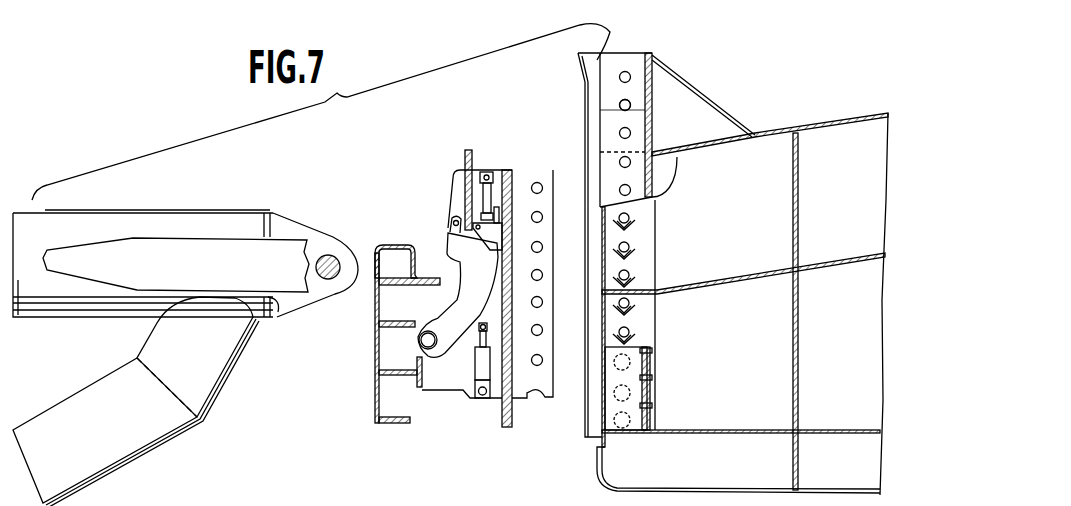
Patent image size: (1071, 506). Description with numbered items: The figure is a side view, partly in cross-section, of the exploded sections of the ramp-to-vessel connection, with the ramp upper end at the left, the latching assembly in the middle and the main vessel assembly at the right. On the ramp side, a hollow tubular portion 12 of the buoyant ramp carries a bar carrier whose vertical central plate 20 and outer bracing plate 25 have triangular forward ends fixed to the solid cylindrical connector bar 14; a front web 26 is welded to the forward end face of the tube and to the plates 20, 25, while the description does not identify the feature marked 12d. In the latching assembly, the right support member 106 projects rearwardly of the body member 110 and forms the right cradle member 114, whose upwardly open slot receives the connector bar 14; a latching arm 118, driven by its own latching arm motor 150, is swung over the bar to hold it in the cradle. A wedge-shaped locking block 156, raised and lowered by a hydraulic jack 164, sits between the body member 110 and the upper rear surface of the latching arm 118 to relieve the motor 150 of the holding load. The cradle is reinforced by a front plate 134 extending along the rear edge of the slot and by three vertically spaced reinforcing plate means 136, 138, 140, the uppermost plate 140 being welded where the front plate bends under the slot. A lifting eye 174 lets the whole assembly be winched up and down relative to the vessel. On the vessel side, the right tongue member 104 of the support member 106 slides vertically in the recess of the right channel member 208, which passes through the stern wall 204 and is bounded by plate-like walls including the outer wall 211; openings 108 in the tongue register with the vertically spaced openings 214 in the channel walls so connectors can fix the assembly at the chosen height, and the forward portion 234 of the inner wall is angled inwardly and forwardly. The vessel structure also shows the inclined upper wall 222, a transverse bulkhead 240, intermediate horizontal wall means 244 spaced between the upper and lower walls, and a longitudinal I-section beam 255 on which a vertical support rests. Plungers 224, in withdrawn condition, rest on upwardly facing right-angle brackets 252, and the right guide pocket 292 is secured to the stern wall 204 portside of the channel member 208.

The hollow tubular portion 12 is at (87, 222).
The arm pad flap 12d is at (210, 399).
The connector bar 14 is at (333, 258).
The central plate 20 is at (293, 232).
The outer bracing plate 25 is at (235, 252).
The front web 26 is at (277, 306).
The right tongue member 104 is at (548, 198).
The right support member 106 is at (520, 170).
The first openings 108 is at (541, 185).
The body member 110 is at (501, 412).
The right cradle member 114 is at (438, 283).
The latching arm 118 is at (489, 270).
The front plate 134 is at (378, 251).
The lowermost reinforcing plate means 136 is at (390, 383).
The reinforcing plate means 138 is at (402, 329).
The uppermost reinforcing plate means 140 is at (388, 287).
The latching arm motor 150 is at (493, 362).
The locking block 156 is at (493, 237).
The hydraulic jack 164 is at (493, 193).
The lifting eye 174 is at (466, 152).
The stern wall 204 is at (602, 397).
The right channel member 208 is at (631, 60).
The outer wall 211 is at (638, 125).
The transverse openings 214 is at (630, 105).
The upper wall 222 is at (828, 123).
The plunger 224 is at (634, 217).
The forward portion of inner wall 234 is at (656, 72).
The bulkhead 240 is at (798, 188).
The intermediate horizontal wall means 244 is at (858, 257).
The right angle bracket 252 is at (634, 248).
The I-section beam 255 is at (712, 430).
The right guide pocket 292 is at (597, 60).